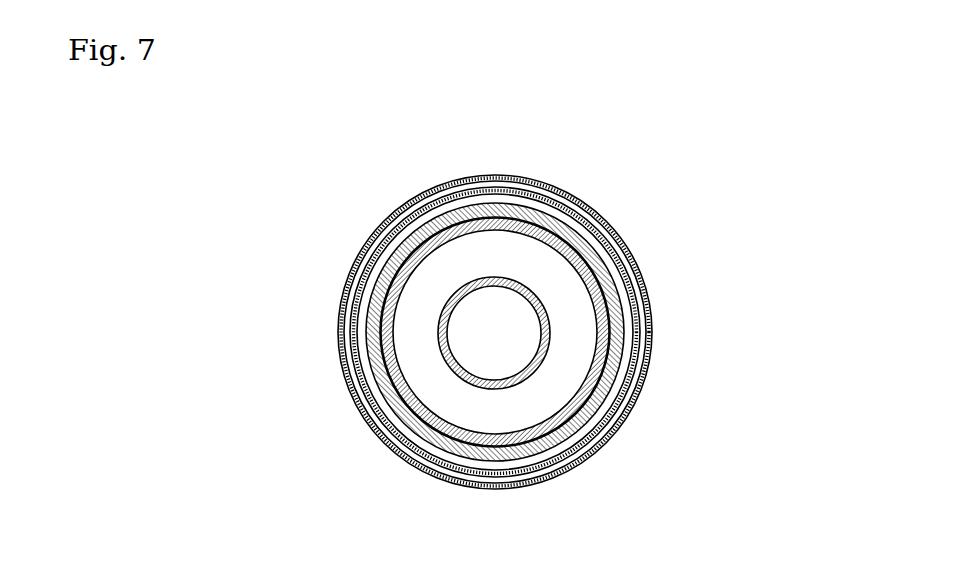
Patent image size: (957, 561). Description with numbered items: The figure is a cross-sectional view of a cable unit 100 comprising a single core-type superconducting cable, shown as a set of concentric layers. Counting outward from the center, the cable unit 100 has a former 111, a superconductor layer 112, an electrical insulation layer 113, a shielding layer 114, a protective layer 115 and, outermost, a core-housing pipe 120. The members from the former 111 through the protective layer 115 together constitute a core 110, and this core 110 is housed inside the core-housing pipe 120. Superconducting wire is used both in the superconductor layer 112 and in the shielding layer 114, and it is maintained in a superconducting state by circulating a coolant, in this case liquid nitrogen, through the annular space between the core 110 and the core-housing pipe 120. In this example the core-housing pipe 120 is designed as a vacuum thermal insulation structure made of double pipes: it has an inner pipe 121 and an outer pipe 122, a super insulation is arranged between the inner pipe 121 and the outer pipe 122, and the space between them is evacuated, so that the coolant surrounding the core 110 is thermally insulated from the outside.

The cable unit 100 is at (539, 322).
The core 110 is at (454, 322).
The former 111 is at (413, 322).
The superconductor layer 112 is at (418, 333).
The electrical insulation layer 113 is at (435, 390).
The shielding layer 114 is at (458, 455).
The protective layer 115 is at (533, 458).
The core-housing pipe 120 is at (720, 395).
The inner pipe 121 is at (530, 332).
The outer pipe 122 is at (536, 332).